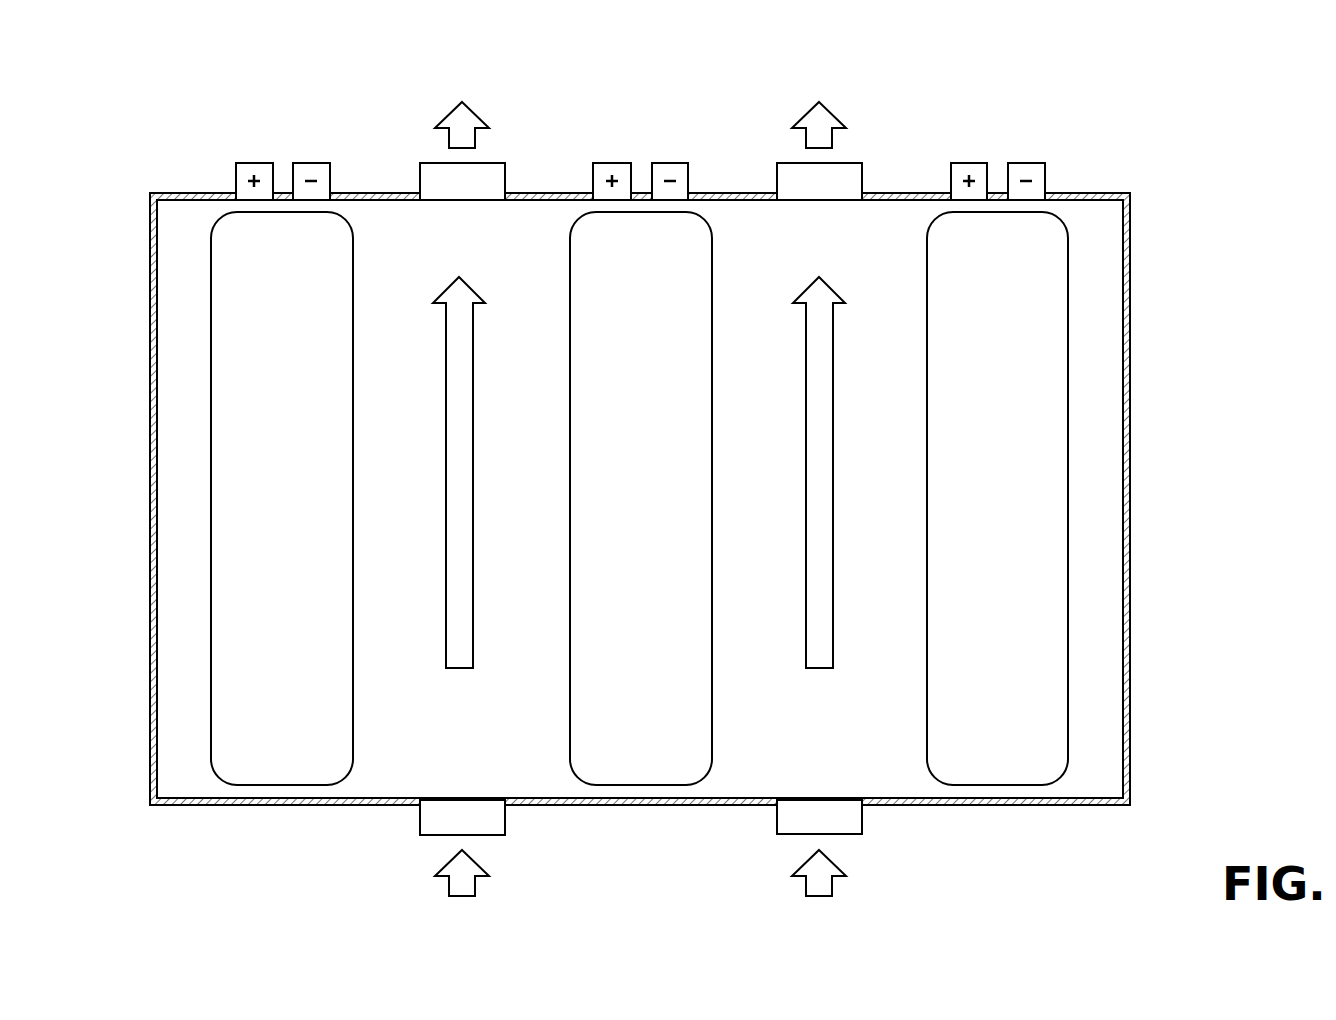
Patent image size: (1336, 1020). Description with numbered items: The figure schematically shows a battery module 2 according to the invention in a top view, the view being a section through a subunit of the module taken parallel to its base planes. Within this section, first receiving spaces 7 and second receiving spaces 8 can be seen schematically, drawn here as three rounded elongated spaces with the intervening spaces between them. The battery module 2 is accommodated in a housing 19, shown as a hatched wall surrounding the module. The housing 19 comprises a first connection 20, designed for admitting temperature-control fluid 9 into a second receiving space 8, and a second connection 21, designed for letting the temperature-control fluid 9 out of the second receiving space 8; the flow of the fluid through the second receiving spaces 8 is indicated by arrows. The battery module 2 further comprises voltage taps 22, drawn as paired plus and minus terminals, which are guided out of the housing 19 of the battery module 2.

The battery module 2 is at (153, 866).
The first receiving space 7 is at (1030, 493).
The second receiving space 8 is at (897, 424).
The temperature-control fluid 9 is at (886, 546).
The housing 19 is at (1130, 328).
The first connection 20 is at (426, 851).
The second connection 21 is at (422, 148).
The voltage taps 22 is at (275, 148).